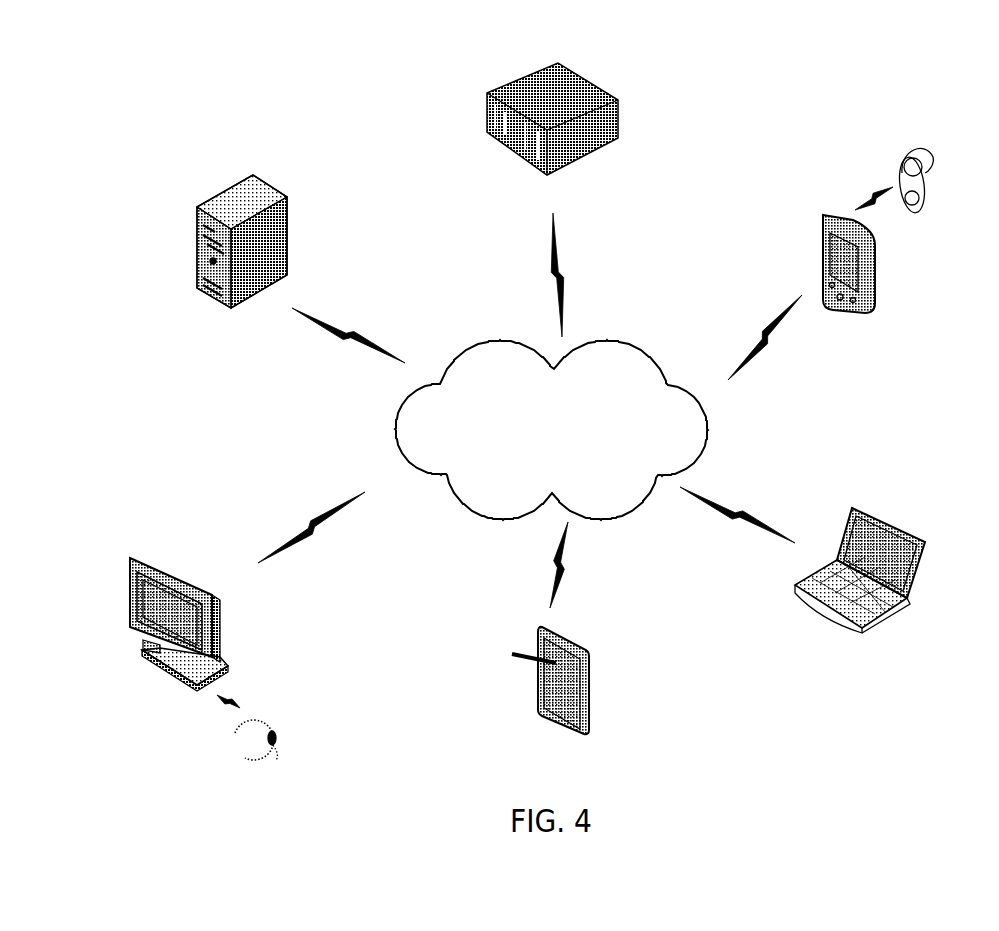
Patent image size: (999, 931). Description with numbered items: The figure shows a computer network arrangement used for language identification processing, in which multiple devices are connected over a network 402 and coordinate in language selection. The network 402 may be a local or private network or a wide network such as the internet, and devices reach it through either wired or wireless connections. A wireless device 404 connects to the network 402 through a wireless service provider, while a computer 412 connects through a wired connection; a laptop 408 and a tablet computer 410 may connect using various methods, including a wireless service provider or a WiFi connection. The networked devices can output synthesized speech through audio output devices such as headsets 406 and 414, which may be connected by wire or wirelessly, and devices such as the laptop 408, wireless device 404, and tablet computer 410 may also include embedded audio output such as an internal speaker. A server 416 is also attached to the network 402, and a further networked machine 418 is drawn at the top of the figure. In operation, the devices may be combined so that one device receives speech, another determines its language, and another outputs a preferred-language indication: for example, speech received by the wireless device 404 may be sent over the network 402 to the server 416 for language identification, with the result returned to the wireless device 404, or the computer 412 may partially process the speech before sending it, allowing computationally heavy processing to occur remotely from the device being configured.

The network 402 is at (600, 340).
The wireless device 404 is at (878, 252).
The headset 406 is at (918, 147).
The laptop 408 is at (867, 512).
The tablet computer 410 is at (585, 647).
The computer 412 is at (177, 572).
The headset 414 is at (270, 712).
The server 416 is at (277, 188).
The server 418 is at (618, 98).